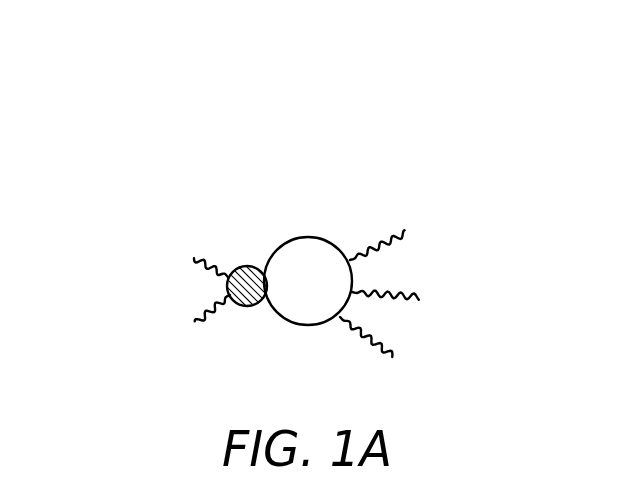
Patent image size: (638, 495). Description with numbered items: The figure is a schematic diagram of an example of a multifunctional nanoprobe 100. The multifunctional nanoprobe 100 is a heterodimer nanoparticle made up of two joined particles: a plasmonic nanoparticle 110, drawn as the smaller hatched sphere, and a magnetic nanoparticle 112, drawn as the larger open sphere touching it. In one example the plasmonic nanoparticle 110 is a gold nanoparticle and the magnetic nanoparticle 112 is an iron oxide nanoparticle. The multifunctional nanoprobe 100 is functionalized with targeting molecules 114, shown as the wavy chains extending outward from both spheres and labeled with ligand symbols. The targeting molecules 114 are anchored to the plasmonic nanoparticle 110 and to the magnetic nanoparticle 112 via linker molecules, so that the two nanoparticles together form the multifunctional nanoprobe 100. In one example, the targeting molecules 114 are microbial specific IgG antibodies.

The multifunctional nanoprobe 100 is at (106, 82).
The plasmonic nanoparticle 110 is at (250, 267).
The magnetic nanoparticle 112 is at (310, 237).
The targeting molecules 114 is at (142, 225).